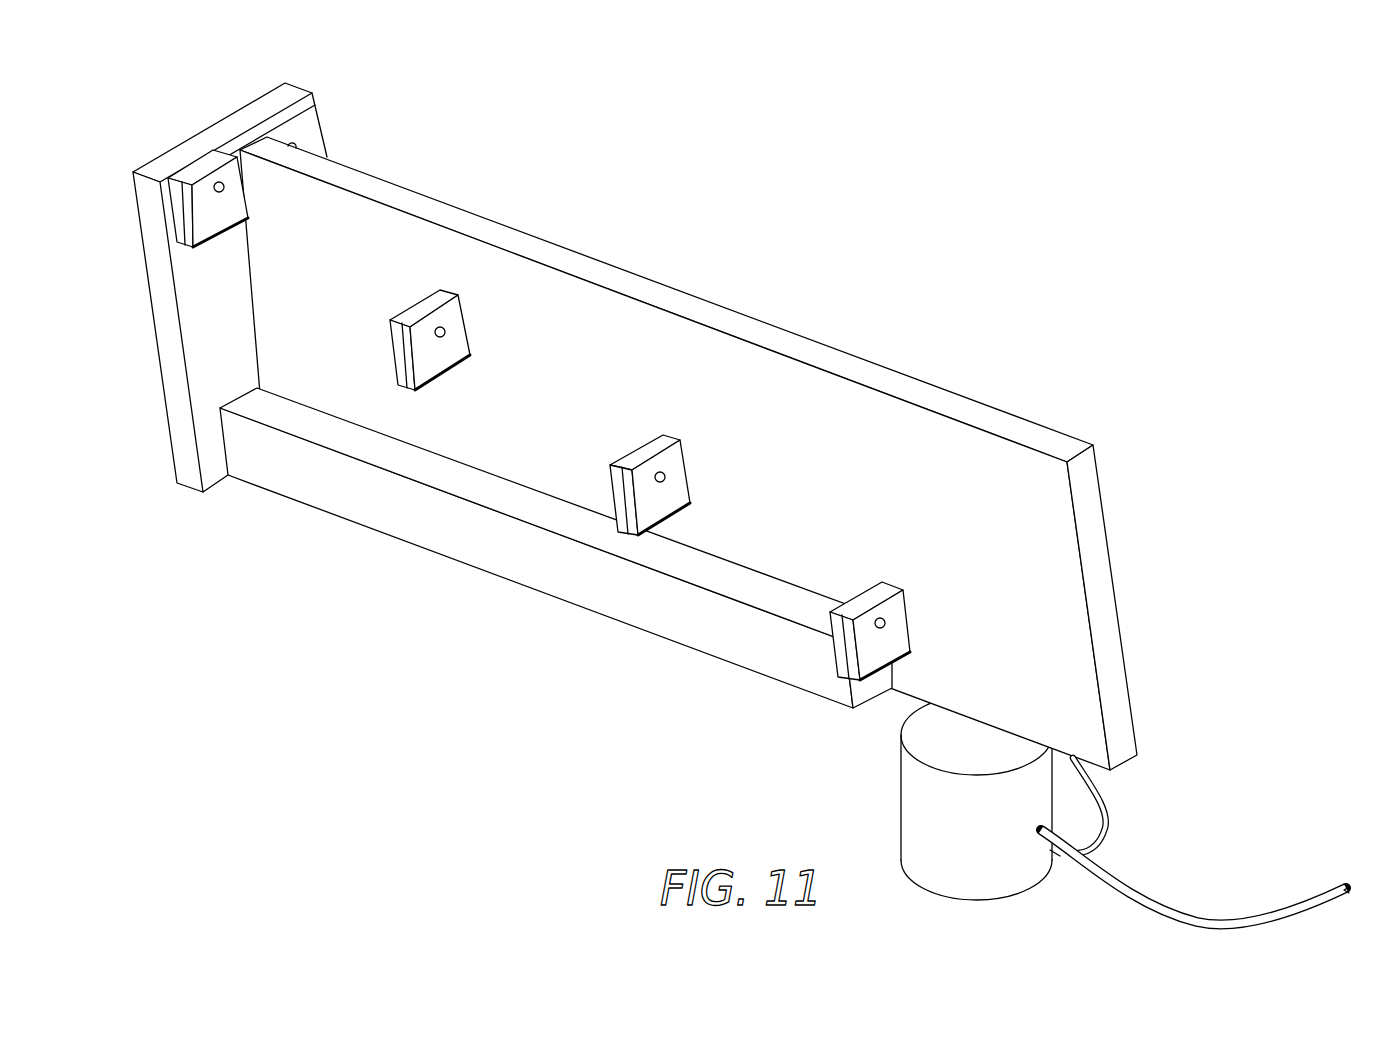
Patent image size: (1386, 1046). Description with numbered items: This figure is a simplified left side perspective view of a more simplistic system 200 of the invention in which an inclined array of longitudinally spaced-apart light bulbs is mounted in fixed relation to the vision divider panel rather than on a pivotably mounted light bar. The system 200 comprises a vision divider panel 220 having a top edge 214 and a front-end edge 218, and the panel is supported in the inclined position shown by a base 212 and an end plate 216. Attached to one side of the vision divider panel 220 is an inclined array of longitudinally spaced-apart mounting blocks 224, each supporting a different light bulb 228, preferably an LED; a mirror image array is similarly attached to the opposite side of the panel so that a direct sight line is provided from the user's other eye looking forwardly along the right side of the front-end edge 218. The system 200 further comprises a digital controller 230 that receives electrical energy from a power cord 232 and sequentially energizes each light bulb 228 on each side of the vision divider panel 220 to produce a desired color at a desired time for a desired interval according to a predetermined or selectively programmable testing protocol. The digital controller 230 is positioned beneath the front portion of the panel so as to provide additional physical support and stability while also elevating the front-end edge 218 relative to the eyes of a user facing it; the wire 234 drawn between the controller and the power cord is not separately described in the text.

The system 200 is at (990, 150).
The base 212 is at (556, 548).
The top edge 214 is at (962, 405).
The end plate 216 is at (222, 130).
The front-end edge 218 is at (1100, 573).
The vision divider panel 220 is at (385, 415).
The mounting block 224 is at (382, 328).
The light bulb 228 is at (440, 327).
The digital controller 230 is at (915, 807).
The power cord 232 is at (1212, 917).
The motor wire 234 is at (1108, 812).